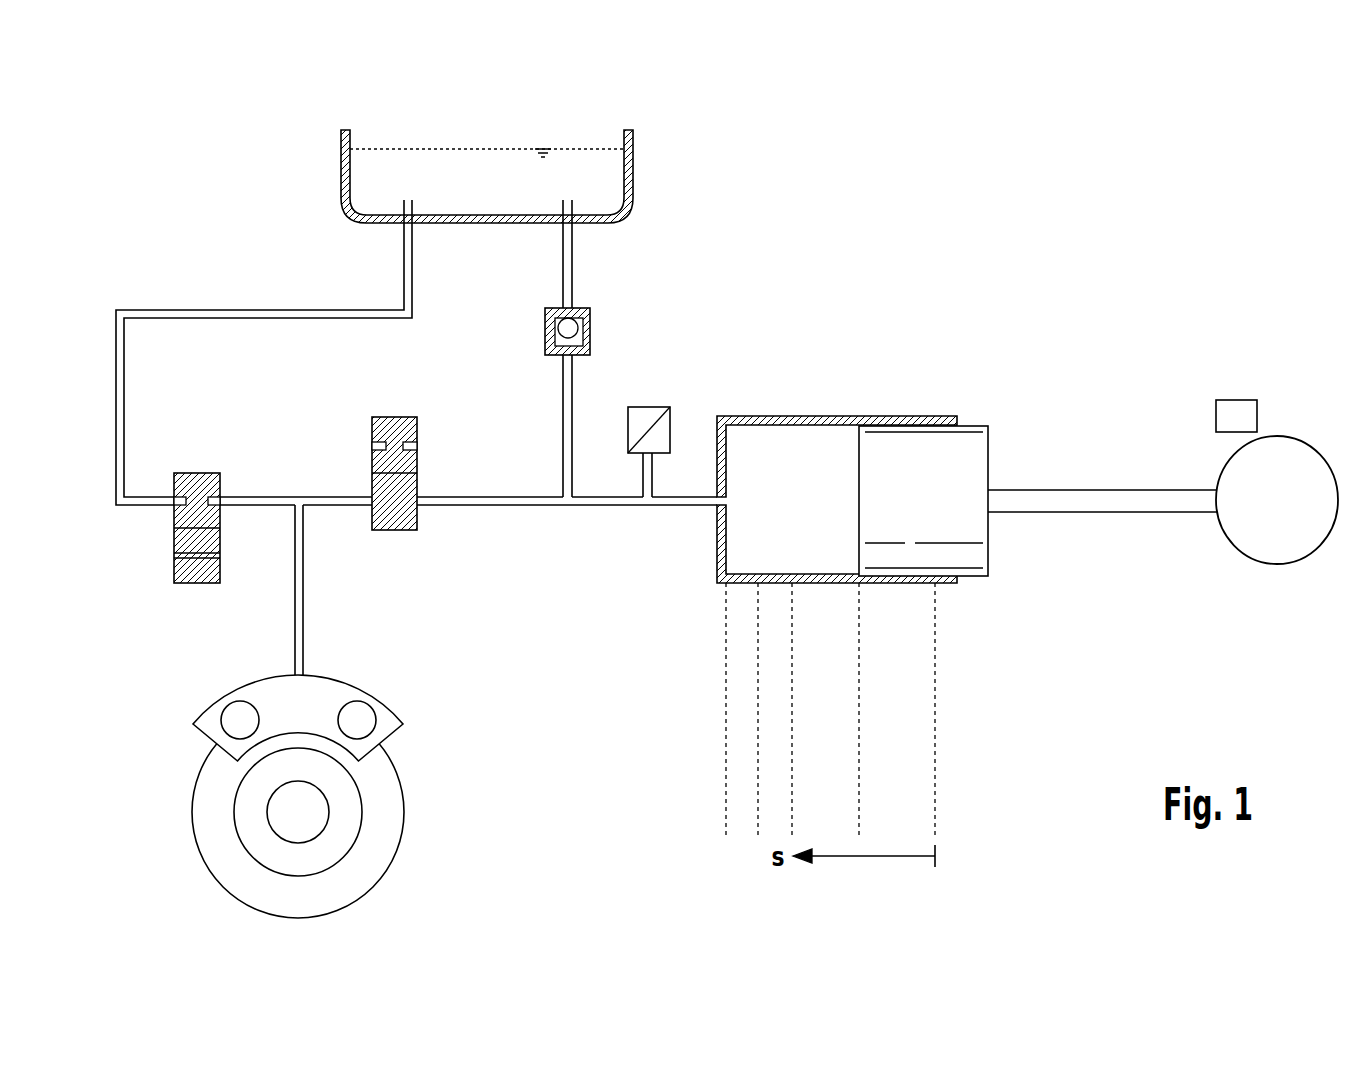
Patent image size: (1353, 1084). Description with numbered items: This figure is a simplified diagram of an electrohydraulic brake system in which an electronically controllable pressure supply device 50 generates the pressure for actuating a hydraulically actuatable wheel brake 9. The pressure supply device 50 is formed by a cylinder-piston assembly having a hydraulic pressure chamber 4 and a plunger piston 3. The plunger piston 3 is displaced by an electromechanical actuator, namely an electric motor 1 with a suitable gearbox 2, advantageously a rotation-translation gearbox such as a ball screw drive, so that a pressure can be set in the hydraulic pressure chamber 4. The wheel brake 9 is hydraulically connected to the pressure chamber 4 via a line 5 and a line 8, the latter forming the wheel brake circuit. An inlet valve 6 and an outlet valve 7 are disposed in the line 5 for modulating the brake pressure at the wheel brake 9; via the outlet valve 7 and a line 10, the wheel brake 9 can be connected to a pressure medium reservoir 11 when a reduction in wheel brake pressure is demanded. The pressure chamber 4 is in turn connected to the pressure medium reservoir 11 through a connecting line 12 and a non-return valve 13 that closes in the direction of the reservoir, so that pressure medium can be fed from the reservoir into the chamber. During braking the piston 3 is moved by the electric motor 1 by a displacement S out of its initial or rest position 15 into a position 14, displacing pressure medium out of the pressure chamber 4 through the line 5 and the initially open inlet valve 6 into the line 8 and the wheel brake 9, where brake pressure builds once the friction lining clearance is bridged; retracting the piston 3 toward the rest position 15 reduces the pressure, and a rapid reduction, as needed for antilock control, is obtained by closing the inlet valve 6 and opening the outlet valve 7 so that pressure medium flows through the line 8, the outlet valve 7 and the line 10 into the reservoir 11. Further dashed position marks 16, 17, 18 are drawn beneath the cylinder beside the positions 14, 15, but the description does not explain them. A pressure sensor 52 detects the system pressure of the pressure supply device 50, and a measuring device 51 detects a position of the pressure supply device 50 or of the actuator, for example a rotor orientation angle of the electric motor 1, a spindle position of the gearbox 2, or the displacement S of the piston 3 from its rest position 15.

The electric motor 1 is at (1290, 438).
The gearbox 2 is at (1105, 512).
The plunger piston 3 is at (988, 448).
The hydraulic pressure chamber 4 is at (785, 440).
The line 5 is at (615, 505).
The inlet valve 6 is at (396, 417).
The outlet valve 7 is at (197, 473).
The line 8 is at (303, 580).
The wheel brake 9 is at (360, 680).
The line 10 is at (124, 343).
The pressure medium reservoir 11 is at (341, 160).
The connecting line 12 is at (563, 265).
The non-return valve 13 is at (590, 325).
The position 14 is at (859, 705).
The initial position 15 is at (935, 655).
The piston position 16 is at (726, 645).
The piston position 17 is at (792, 697).
The piston position 18 is at (758, 745).
The pressure supply device 50 is at (926, 392).
The measuring device 51 is at (1235, 400).
The pressure sensor 52 is at (650, 407).